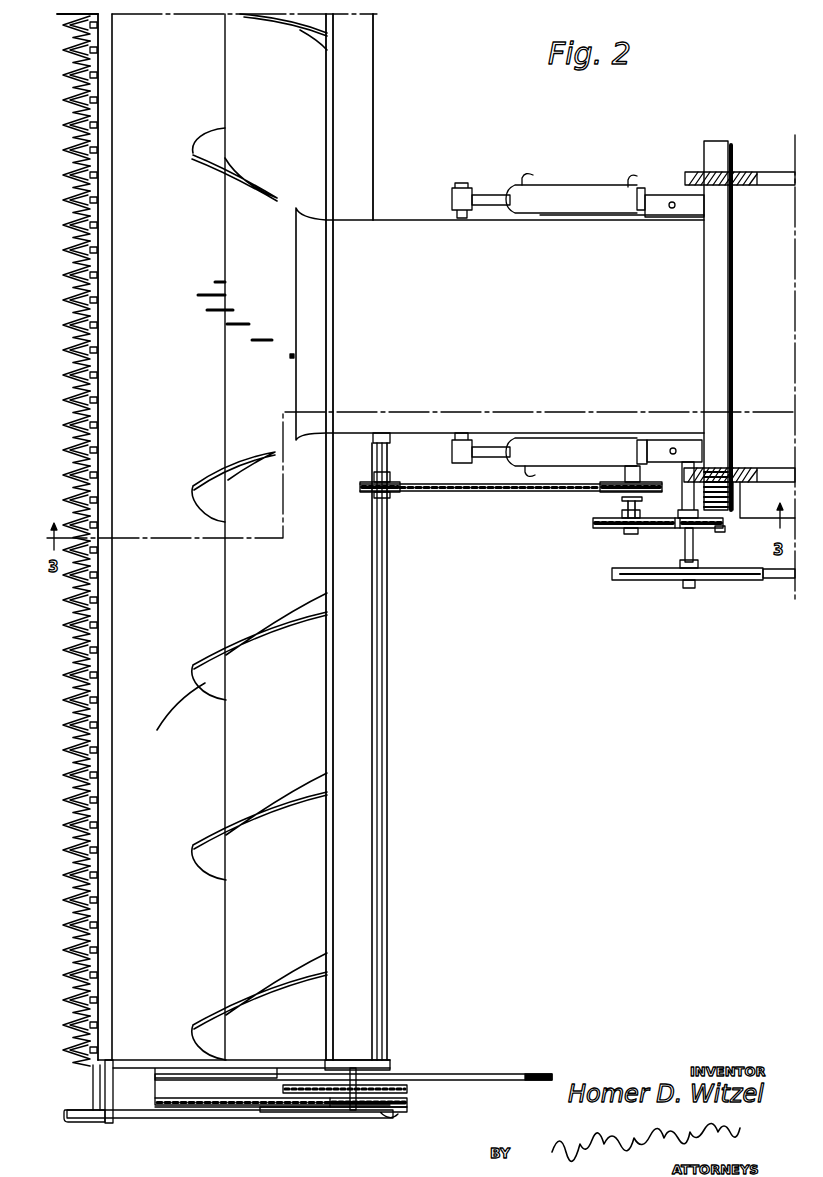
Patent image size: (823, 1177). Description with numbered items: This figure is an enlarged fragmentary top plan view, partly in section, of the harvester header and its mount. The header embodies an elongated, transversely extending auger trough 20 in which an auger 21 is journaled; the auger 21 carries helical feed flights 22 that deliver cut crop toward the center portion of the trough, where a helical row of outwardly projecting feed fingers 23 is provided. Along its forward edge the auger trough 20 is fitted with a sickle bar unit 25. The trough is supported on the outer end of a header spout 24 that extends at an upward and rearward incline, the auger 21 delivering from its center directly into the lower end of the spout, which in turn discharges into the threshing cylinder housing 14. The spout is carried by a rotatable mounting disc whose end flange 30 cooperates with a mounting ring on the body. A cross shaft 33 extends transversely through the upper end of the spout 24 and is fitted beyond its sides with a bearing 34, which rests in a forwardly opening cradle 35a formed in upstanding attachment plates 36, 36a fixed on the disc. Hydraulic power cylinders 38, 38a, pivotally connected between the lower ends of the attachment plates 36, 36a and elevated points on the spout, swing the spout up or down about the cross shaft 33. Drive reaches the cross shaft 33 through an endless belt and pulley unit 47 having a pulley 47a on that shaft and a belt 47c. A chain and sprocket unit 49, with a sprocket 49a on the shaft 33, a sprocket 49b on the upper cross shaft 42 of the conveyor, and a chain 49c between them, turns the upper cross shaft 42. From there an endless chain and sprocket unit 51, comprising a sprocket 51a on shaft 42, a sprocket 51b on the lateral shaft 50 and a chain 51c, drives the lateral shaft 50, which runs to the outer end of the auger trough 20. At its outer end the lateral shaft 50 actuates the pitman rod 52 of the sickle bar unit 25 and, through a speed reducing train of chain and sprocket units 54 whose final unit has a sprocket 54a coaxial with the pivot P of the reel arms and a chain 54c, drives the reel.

The threshing cylinder housing 14 is at (746, 292).
The auger trough 20 is at (212, 950).
The auger 21 is at (240, 578).
The helical feed flights 22 is at (238, 820).
The feed fingers 23 is at (255, 340).
The header spout 24 is at (404, 232).
The sickle bar unit 25 is at (54, 820).
The end flange 30 is at (727, 262).
The cross shaft 33 is at (696, 547).
The bearing 34 is at (682, 494).
The cradle 35a is at (665, 195).
The attachment plate 36 is at (658, 438).
The attachment plate 36a is at (668, 221).
The hydraulic power cylinder 38 is at (556, 458).
The hydraulic power cylinder 38a is at (563, 188).
The upper cross shaft 42 is at (627, 503).
The endless belt and pulley unit 47 is at (640, 583).
The pulley 47a is at (745, 583).
The belt 47c is at (778, 578).
The chain and sprocket unit 49 is at (612, 534).
The sprocket 49a is at (718, 531).
The sprocket 49b is at (600, 529).
The chain 49c is at (660, 530).
The lateral shaft 50 is at (390, 853).
The endless chain and sprocket unit 51 is at (452, 494).
The sprocket 51a is at (612, 482).
The sprocket 51b is at (384, 498).
The chain 51c is at (490, 492).
The pitman rod 52 is at (440, 1074).
The speed reducing train of chain and sprocket units 54 is at (354, 1082).
The sprocket 54a is at (362, 1108).
The chain 54c is at (235, 1108).
The pivot P is at (353, 1080).